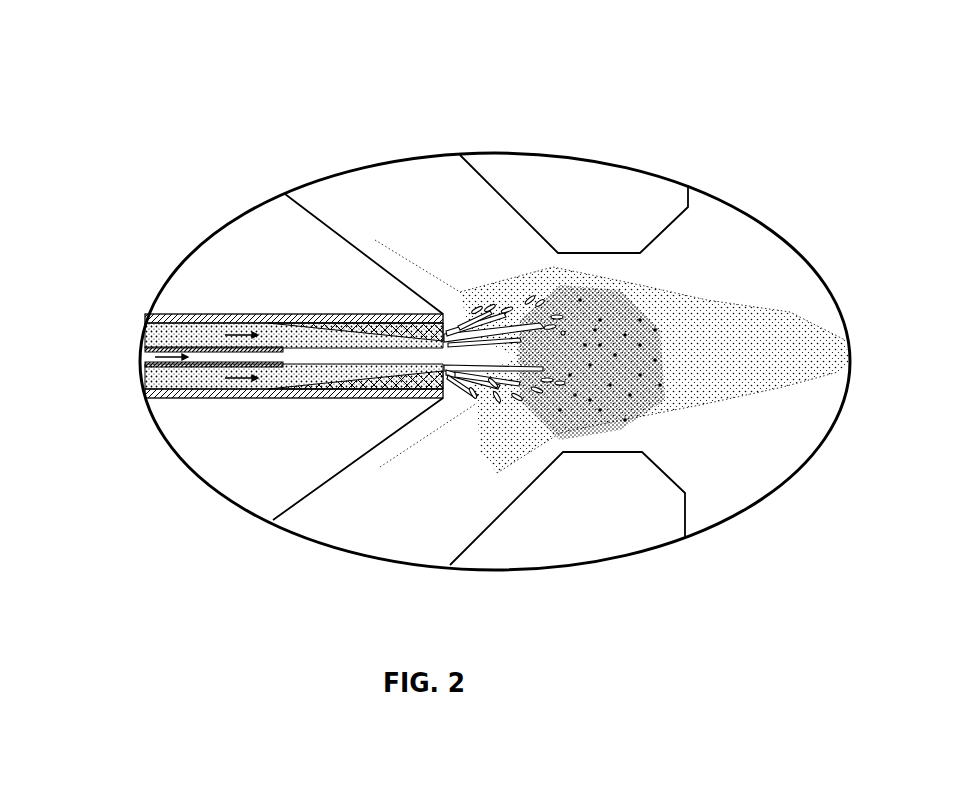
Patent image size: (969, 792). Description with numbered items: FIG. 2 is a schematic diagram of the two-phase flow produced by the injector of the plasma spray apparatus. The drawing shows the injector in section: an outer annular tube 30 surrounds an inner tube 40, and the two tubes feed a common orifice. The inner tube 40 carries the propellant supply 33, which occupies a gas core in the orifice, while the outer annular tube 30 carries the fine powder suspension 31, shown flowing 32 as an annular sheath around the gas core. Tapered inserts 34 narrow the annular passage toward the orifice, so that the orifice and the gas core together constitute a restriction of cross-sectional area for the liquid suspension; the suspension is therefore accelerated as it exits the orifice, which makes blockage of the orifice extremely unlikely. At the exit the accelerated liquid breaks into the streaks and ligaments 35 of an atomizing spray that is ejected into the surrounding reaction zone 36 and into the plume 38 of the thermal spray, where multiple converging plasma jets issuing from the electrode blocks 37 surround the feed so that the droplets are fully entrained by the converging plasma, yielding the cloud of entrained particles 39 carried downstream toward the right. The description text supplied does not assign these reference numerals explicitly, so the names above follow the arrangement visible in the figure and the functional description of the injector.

The outer tube wall 30 is at (187, 313).
The sheath gas region 31 is at (147, 344).
The sheath gas flow 32 is at (224, 335).
The central precursor flow 33 is at (140, 356).
The tapered insulating wedge 34 is at (385, 325).
The plasma jet streaks 35 is at (466, 326).
The reaction zone 36 is at (465, 250).
The electrode block 37 is at (632, 203).
The plasma plume core 38 is at (580, 342).
The particle plume 39 is at (620, 342).
The inner tube 40 is at (325, 355).